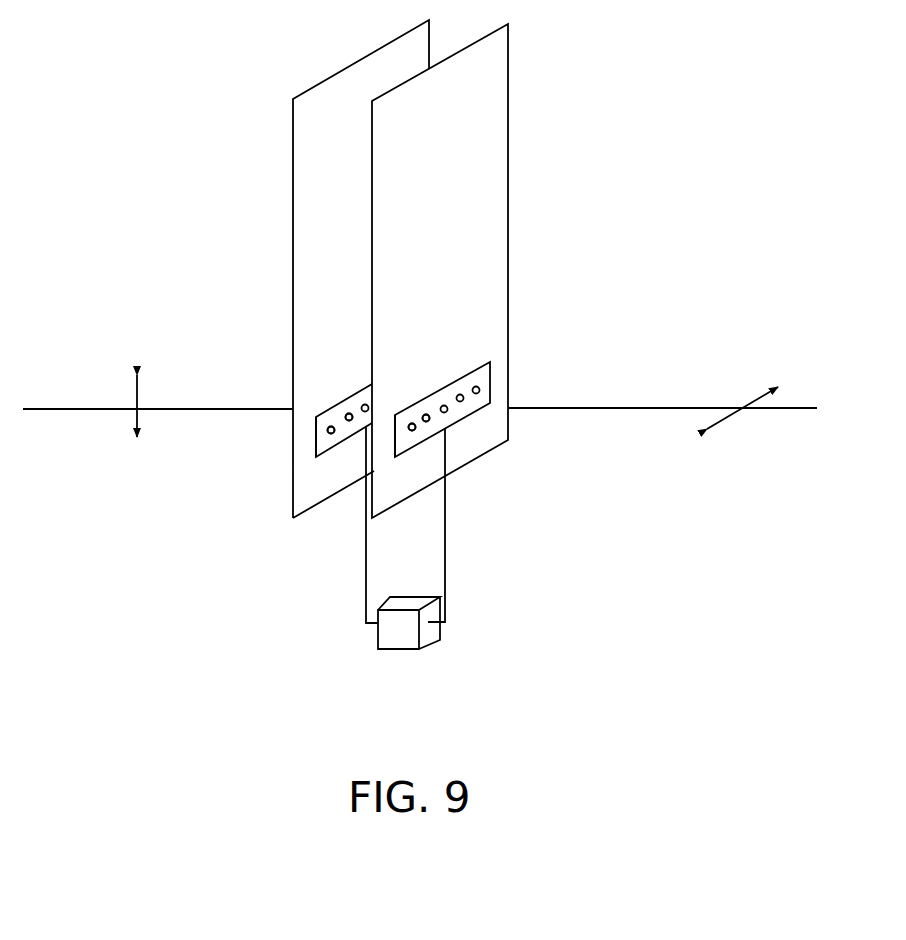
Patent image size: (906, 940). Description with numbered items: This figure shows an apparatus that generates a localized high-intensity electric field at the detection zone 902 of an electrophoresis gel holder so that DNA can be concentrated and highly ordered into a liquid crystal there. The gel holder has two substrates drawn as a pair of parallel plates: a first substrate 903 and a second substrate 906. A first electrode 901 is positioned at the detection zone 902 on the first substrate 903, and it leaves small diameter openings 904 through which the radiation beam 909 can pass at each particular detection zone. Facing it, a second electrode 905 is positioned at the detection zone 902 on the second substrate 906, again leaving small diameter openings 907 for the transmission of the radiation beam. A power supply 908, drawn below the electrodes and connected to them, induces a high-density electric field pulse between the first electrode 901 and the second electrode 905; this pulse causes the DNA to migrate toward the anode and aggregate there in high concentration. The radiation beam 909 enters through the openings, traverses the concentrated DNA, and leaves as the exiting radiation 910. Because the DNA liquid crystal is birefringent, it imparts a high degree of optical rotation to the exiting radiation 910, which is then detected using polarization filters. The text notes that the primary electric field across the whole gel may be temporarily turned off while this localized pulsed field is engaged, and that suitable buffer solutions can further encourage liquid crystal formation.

The first electrode 901 is at (480, 376).
The detection zone 902 is at (280, 385).
The first substrate 903 is at (490, 275).
The small diameter openings 904 is at (429, 419).
The second electrode 905 is at (336, 409).
The second substrate 906 is at (313, 272).
The small diameter openings 907 is at (349, 421).
The power supply 908 is at (403, 637).
The radiation beam 909 is at (68, 409).
The exiting radiation 910 is at (795, 407).